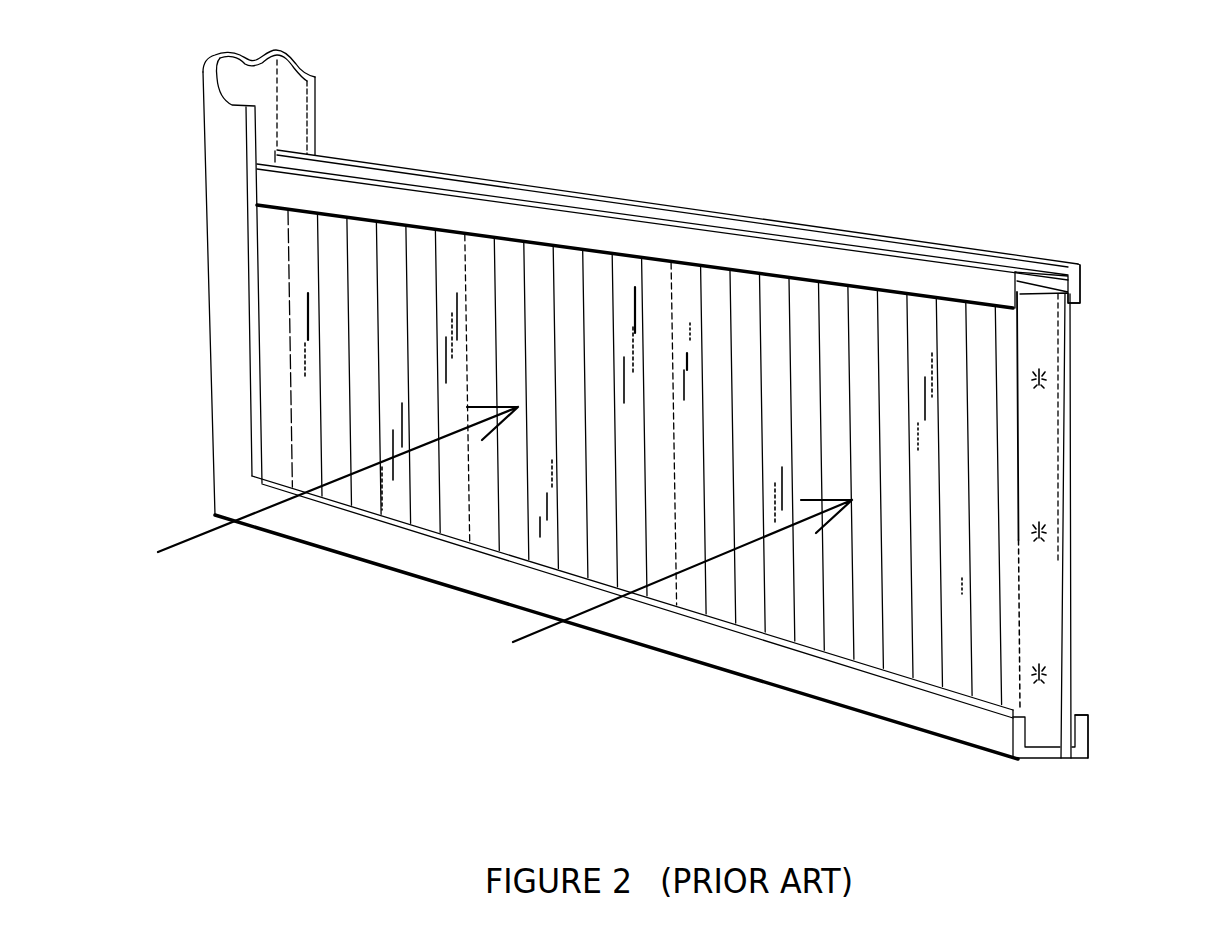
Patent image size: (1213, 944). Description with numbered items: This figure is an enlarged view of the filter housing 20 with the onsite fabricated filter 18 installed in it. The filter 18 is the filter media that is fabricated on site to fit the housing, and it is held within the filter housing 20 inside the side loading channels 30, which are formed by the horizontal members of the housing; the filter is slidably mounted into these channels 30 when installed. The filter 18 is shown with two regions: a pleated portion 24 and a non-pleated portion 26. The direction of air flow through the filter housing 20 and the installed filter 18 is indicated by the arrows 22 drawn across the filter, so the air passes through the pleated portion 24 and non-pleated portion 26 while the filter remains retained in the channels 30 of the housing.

The onsite fabricated filter 18 is at (898, 657).
The filter housing 20 is at (712, 244).
The arrows 22 is at (213, 530).
The pleated portion 24 is at (795, 623).
The non-pleated portion 26 is at (1045, 475).
The channels 30 is at (1049, 289).